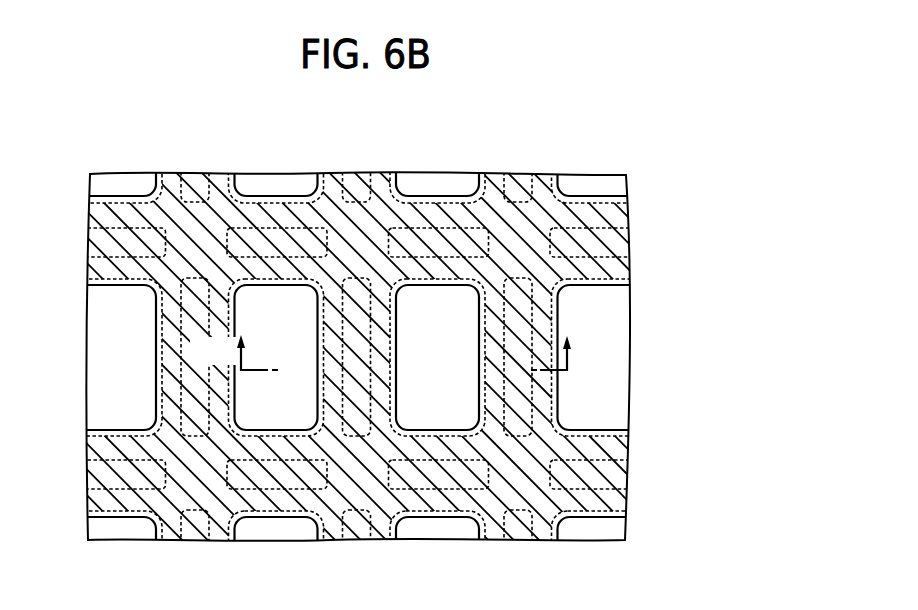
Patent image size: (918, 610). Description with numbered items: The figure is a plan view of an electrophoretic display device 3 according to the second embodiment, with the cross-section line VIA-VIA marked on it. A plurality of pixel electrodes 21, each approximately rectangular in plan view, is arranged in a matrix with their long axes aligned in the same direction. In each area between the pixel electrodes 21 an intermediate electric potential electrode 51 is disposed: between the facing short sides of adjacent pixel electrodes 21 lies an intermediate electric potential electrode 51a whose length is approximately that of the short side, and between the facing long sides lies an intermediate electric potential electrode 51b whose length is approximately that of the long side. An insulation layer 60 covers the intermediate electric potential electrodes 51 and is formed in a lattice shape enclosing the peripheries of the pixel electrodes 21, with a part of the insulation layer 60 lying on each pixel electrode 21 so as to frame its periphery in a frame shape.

The wiring board 3 is at (459, 305).
The pixel electrode 21 is at (457, 405).
The intermediate electric potential electrode 51 is at (406, 355).
The intermediate electric potential electrode 51a is at (613, 243).
The intermediate electric potential electrode 51b is at (518, 333).
The insulation layer 60 is at (610, 505).